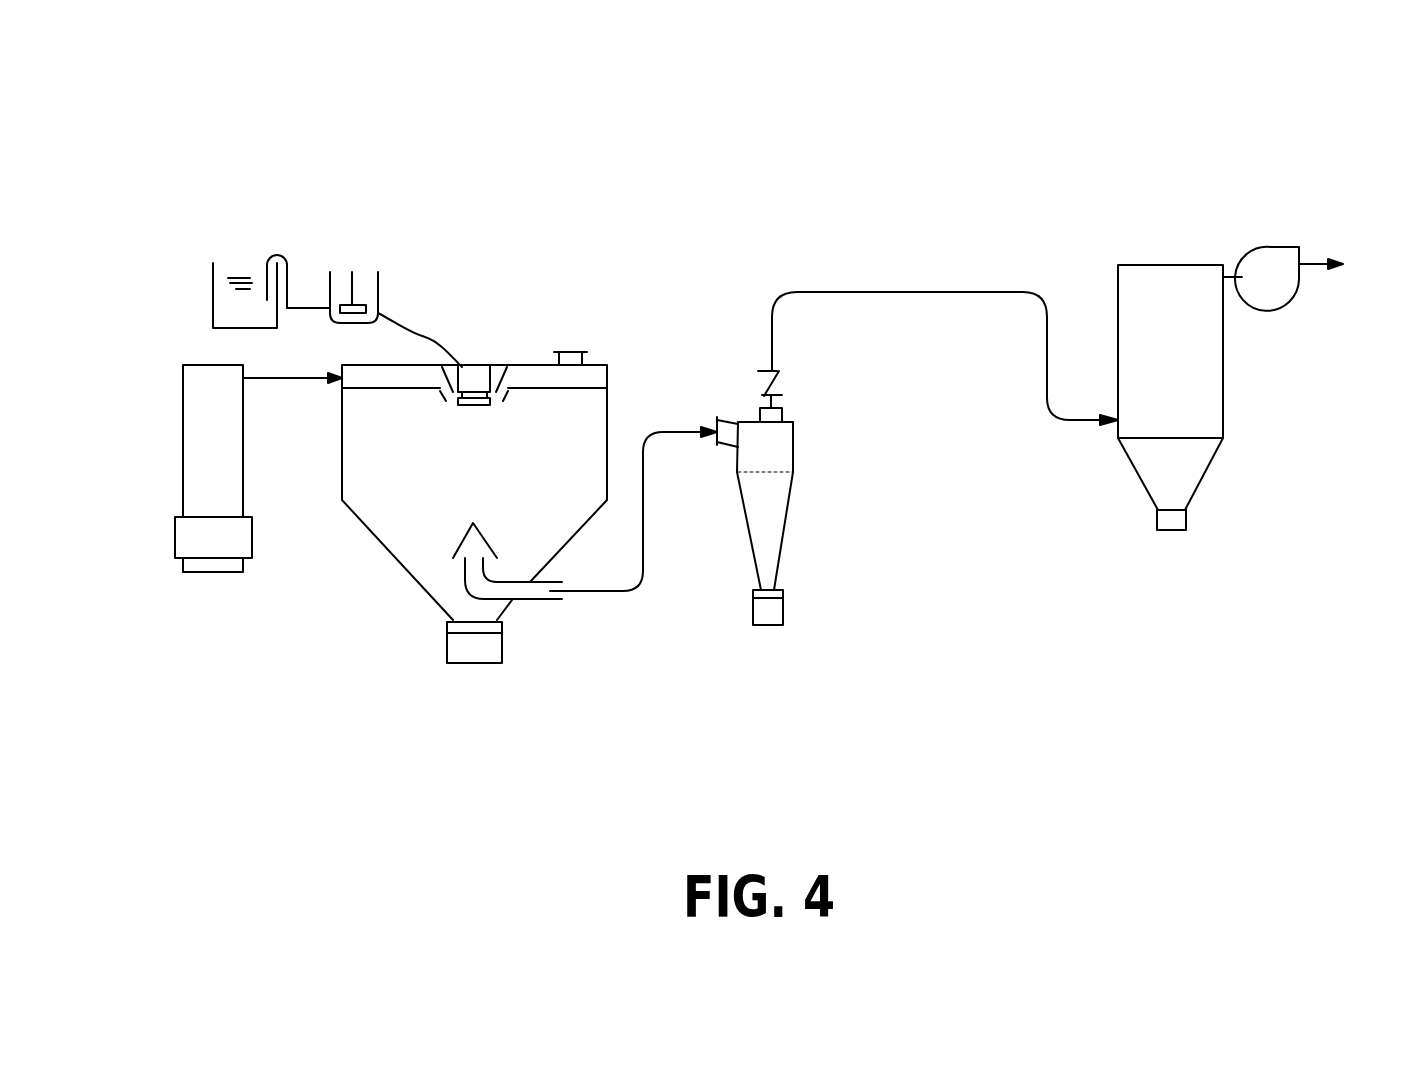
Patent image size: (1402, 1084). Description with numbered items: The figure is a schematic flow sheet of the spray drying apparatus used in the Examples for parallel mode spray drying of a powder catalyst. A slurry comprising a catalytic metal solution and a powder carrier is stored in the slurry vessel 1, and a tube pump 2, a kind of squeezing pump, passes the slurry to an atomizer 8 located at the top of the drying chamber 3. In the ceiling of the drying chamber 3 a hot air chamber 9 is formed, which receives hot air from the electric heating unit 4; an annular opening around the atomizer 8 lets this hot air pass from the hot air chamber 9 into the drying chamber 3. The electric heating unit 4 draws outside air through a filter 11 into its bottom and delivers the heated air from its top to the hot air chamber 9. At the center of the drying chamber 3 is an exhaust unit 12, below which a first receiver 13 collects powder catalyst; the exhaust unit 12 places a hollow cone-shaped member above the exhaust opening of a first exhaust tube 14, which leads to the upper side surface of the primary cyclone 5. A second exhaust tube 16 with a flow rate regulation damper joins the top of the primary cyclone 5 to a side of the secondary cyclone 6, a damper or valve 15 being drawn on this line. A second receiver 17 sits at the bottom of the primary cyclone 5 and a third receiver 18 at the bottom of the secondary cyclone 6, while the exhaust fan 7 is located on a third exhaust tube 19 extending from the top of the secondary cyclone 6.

The slurry vessel 1 is at (213, 288).
The tube pump 2 is at (377, 282).
The drying chamber 3 is at (360, 522).
The electric heating unit 4 is at (183, 445).
The primary cyclone 5 is at (788, 508).
The secondary cyclone 6 is at (1223, 372).
The exhaust fan 7 is at (1282, 247).
The atomizer 8 is at (473, 377).
The hot air chamber 9 is at (595, 373).
The filter 11 is at (175, 540).
The exhaust unit 12 is at (463, 542).
The first receiver 13 is at (475, 663).
The first exhaust tube 14 is at (647, 600).
The cyclone outlet pipe 15 is at (777, 372).
The second exhaust tube 16 is at (870, 292).
The second receiver 17 is at (783, 610).
The third receiver 18 is at (1187, 520).
The third exhaust tube 19 is at (1232, 275).